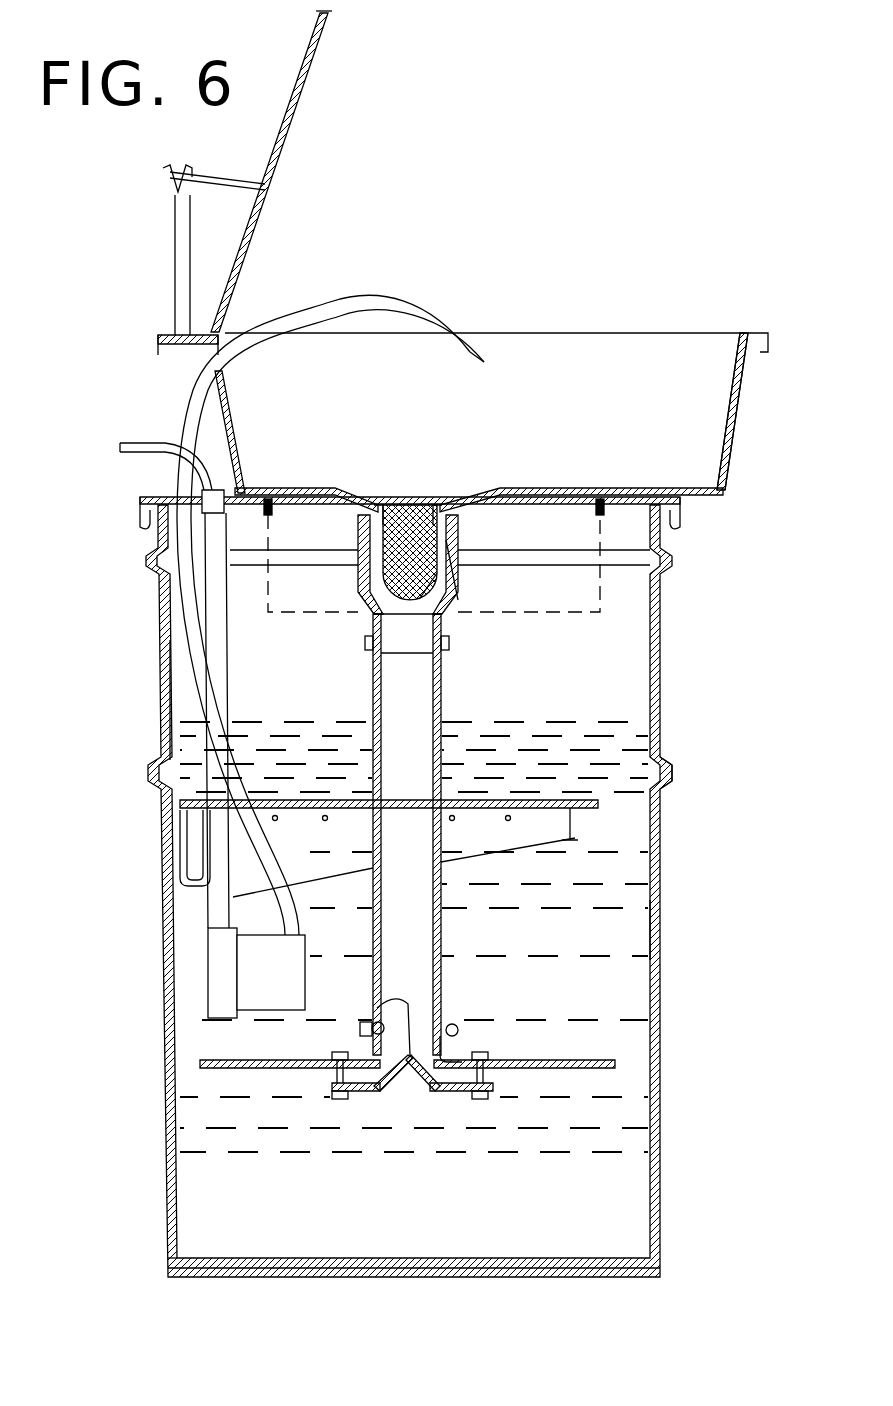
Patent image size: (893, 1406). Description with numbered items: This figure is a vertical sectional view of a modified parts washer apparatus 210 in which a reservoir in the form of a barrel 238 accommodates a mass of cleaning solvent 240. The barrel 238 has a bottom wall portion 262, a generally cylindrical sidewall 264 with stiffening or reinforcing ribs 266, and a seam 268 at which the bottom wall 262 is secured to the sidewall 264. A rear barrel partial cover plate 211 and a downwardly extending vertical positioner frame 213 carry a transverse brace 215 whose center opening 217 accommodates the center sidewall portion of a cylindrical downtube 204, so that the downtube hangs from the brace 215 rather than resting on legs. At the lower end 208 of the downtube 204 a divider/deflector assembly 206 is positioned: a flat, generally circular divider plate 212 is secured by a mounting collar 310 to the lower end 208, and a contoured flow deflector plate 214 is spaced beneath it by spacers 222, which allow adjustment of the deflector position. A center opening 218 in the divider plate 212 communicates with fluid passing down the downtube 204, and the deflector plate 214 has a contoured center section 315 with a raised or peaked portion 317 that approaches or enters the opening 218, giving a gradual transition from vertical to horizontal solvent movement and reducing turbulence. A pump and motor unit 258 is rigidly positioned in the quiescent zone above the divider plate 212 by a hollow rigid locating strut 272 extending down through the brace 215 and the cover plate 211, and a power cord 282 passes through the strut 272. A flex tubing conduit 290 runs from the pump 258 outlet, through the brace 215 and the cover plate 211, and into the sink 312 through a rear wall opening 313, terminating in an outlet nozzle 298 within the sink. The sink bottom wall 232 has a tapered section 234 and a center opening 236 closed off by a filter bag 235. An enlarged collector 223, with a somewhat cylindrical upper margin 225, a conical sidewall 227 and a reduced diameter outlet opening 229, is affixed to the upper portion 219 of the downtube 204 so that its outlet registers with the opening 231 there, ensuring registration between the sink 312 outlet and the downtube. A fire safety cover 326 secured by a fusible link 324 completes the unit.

The downtube 204 is at (441, 698).
The divider/deflector assembly 206 is at (407, 1060).
The lower end of the downtube 208 is at (360, 1028).
The parts washer apparatus 210 is at (155, 412).
The rear barrel partial cover plate 211 is at (240, 480).
The divider plate 212 is at (228, 1070).
The vertical positioner frame 213 is at (200, 711).
The flow deflector plate 214 is at (378, 1088).
The transverse brace 215 is at (508, 835).
The center opening 217 is at (468, 866).
The center opening 218 is at (430, 1072).
The upper portion of the downtube 219 is at (380, 652).
The spacers 222 is at (335, 1080).
The enlarged collector 223 is at (458, 527).
The upper margin 225 is at (460, 560).
The conical sidewall 227 is at (413, 583).
The outlet opening 229 is at (392, 670).
The opening in the upper margin of the downtube 231 is at (395, 625).
The sink bottom wall 232 is at (530, 490).
The tapered section 234 is at (348, 488).
The filter bag 235 is at (397, 552).
The center opening 236 is at (405, 505).
The barrel 238 is at (700, 718).
The cleaning solvent 240 is at (598, 938).
The pump and motor unit 258 is at (225, 968).
The bottom wall portion 262 is at (400, 1275).
The sidewall 264 is at (650, 937).
The reinforcing ribs 266 is at (672, 780).
The seam 268 is at (168, 1266).
The locating strut 272 is at (223, 868).
The power cord 282 is at (150, 455).
The conduit 290 is at (233, 897).
The outlet nozzle 298 is at (480, 366).
The mounting collar 310 is at (490, 1038).
The sink 312 is at (556, 330).
The rear wall opening 313 is at (224, 372).
The contoured center section 315 is at (380, 1012).
The peaked portion 317 is at (407, 1075).
The fusible link 324 is at (268, 188).
The fire safety cover 326 is at (285, 140).